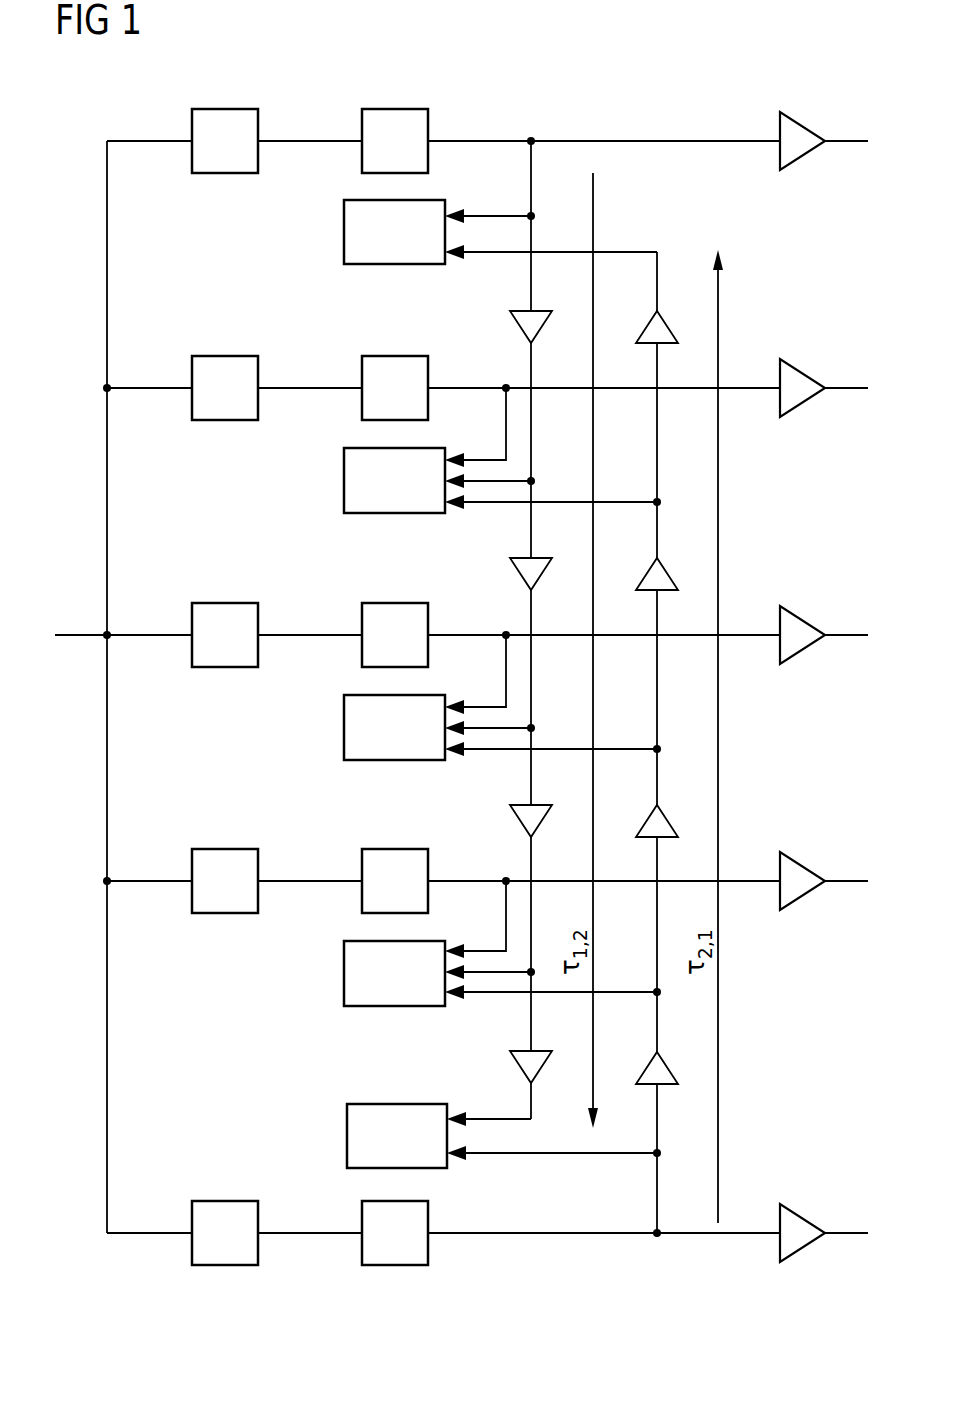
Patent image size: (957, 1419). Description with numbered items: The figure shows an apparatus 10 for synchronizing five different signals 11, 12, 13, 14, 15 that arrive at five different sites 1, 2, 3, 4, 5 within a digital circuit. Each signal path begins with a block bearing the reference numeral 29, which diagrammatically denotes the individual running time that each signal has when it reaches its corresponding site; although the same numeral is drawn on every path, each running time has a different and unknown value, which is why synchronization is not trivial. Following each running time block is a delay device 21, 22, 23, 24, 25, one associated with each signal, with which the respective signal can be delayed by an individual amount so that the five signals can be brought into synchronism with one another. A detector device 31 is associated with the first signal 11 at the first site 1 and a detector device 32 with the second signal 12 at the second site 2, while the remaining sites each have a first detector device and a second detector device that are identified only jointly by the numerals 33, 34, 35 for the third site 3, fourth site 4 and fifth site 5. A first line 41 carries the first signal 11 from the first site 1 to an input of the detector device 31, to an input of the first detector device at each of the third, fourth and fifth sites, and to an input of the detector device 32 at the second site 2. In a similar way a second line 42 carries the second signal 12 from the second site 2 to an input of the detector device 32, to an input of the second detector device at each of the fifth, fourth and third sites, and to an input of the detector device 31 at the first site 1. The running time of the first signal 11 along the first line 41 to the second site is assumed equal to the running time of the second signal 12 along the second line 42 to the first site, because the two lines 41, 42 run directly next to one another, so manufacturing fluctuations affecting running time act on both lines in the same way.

The apparatus 10 is at (733, 74).
The first site 1 is at (708, 193).
The second site 2 is at (750, 1182).
The third site 3 is at (744, 441).
The fourth site 4 is at (748, 687).
The fifth site 5 is at (748, 934).
The first signal 11 is at (428, 134).
The second signal 12 is at (429, 1226).
The third signal 13 is at (428, 381).
The fourth signal 14 is at (428, 628).
The fifth signal 15 is at (428, 874).
The delay device 21 is at (398, 109).
The delay device 22 is at (396, 1265).
The delay device 23 is at (398, 356).
The delay device 24 is at (398, 603).
The delay device 25 is at (398, 849).
The individual running time 29 is at (226, 109).
The detector device 31 is at (344, 237).
The detector device 32 is at (347, 1138).
The first and second detector device 33 is at (344, 484).
The first and second detector device 34 is at (344, 731).
The first and second detector device 35 is at (344, 977).
The first line 41 is at (531, 783).
The second line 42 is at (660, 783).